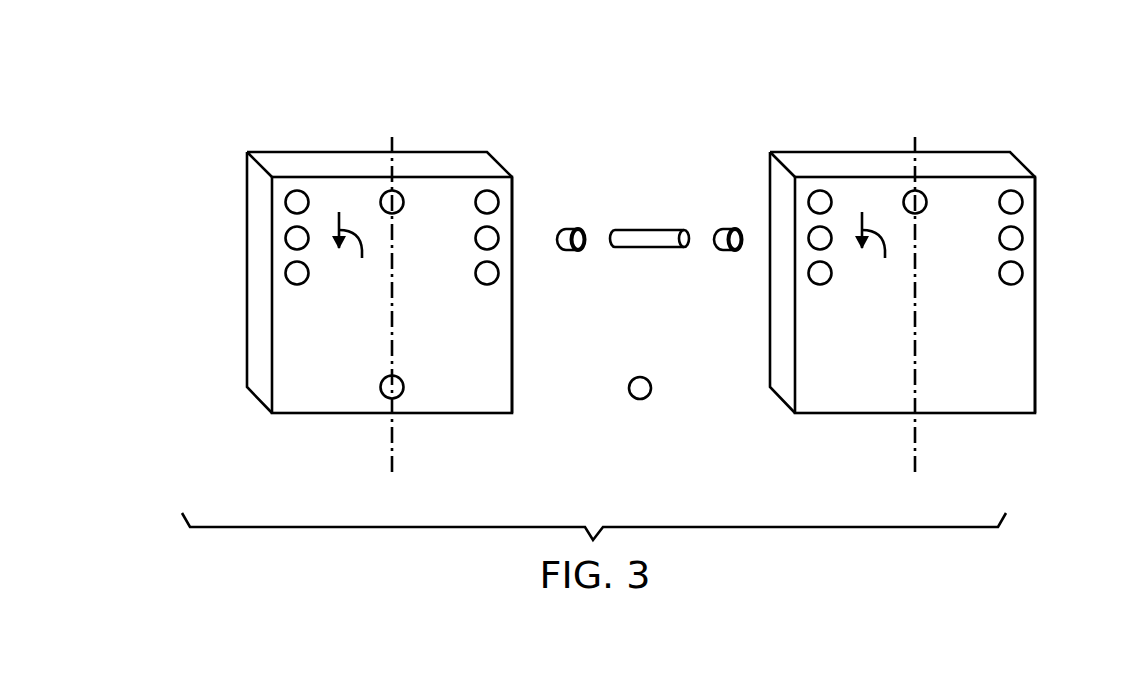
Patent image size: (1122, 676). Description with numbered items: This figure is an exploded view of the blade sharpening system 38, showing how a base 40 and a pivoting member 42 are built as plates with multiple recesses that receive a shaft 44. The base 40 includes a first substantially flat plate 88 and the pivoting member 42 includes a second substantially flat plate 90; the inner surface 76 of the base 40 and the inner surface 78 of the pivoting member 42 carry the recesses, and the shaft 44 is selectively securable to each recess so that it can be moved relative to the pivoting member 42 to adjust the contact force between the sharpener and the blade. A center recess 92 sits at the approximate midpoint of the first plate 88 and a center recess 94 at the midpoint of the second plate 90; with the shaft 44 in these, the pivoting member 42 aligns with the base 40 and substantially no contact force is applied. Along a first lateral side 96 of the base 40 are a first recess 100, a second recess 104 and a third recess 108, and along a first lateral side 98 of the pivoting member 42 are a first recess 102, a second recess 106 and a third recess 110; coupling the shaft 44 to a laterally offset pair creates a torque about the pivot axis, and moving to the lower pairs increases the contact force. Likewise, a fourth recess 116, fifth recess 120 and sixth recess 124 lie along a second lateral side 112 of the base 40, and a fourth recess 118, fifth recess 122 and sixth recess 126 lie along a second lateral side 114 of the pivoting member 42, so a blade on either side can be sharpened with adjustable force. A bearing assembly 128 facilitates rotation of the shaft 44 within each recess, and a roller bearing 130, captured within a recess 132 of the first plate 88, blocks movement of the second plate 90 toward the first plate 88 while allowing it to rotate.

The blade sharpening system 38 is at (683, 76).
The base 40 is at (365, 165).
The pivoting member 42 is at (889, 165).
The shaft 44 is at (646, 230).
The inner surface of the base 76 is at (285, 342).
The inner surface of the pivoting member 78 is at (808, 342).
The first substantially flat plate 88 is at (322, 146).
The second substantially flat plate 90 is at (845, 146).
The center recess 92 is at (400, 194).
The center recess 94 is at (923, 194).
The first lateral side of the base 96 is at (262, 218).
The first lateral side of the pivoting member 98 is at (1045, 235).
The first recess 100 is at (289, 194).
The first recess 102 is at (1004, 194).
The second recess 104 is at (289, 246).
The second recess 106 is at (1002, 246).
The third recess 108 is at (289, 281).
The third recess 110 is at (1003, 281).
The second lateral side of the base 112 is at (521, 235).
The second lateral side of the pivoting member 114 is at (785, 218).
The fourth recess 116 is at (480, 194).
The fourth recess 118 is at (813, 194).
The fifth recess 120 is at (479, 246).
The fifth recess 122 is at (812, 246).
The sixth recess 124 is at (480, 281).
The sixth recess 126 is at (812, 281).
The bearing assembly 128 is at (718, 249).
The roller bearing 130 is at (633, 398).
The recess 132 is at (400, 379).